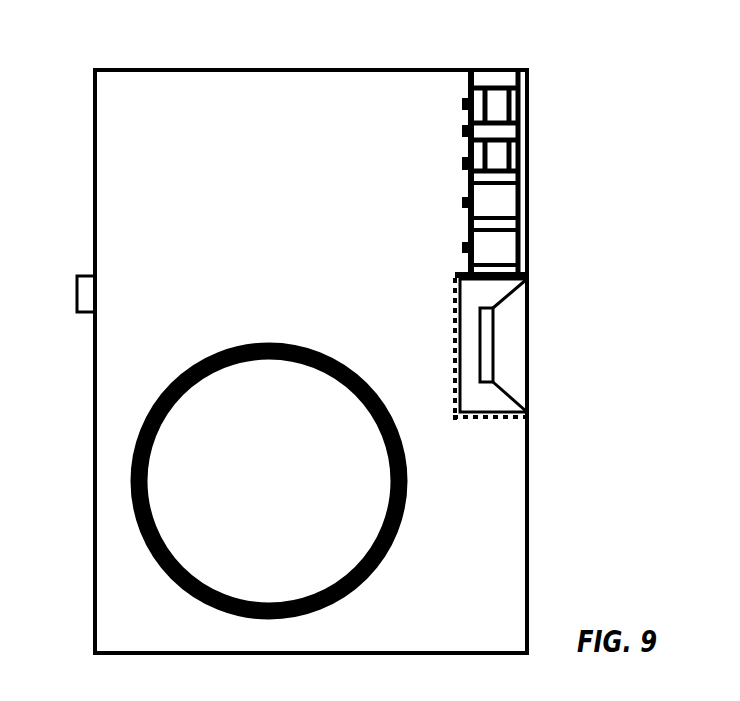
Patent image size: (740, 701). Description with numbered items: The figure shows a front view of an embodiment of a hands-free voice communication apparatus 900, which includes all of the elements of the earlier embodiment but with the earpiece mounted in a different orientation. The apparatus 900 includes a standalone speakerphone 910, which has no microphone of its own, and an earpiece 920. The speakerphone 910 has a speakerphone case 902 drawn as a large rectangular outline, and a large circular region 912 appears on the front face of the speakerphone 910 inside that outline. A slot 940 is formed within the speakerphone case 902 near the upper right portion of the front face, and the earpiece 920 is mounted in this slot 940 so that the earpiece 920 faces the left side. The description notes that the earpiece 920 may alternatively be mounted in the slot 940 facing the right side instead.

The hands-free voice communication apparatus 900 is at (90, 47).
The speakerphone case 902 is at (94, 482).
The standalone speakerphone 910 is at (286, 310).
The circular display / control region 912 is at (285, 496).
The earpiece 920 is at (497, 69).
The slot 940 is at (455, 343).